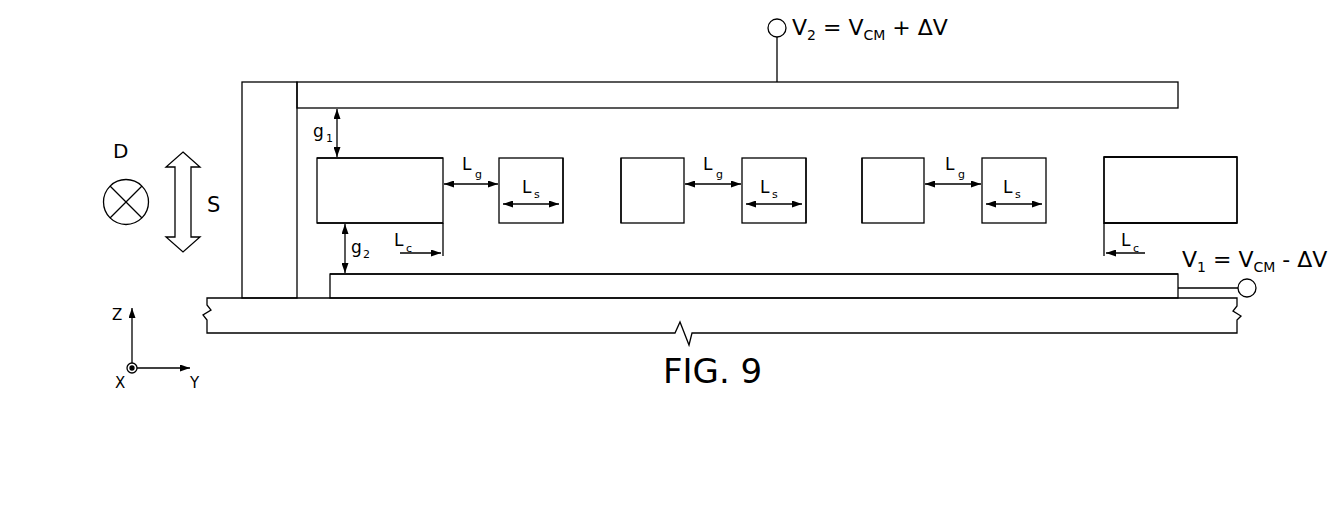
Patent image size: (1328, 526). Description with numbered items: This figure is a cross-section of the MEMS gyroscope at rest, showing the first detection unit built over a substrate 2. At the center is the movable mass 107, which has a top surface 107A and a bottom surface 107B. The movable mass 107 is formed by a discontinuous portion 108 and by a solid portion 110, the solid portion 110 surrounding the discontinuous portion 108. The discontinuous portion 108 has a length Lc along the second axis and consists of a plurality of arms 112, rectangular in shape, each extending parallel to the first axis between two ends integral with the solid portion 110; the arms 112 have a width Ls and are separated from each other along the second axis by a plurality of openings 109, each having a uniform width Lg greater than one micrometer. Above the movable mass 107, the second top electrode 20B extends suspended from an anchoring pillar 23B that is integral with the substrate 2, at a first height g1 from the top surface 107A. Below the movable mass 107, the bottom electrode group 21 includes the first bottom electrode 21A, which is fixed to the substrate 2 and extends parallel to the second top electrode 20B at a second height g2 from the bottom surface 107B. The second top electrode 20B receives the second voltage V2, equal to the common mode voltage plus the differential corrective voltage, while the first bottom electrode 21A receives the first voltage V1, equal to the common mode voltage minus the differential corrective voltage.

The substrate 2 is at (717, 328).
The second top electrode 20B is at (1143, 95).
The bottom electrode group 21 is at (1055, 266).
The first bottom electrode 21A is at (960, 252).
The anchoring pillar 23B is at (257, 92).
The movable mass 107 is at (1226, 133).
The top surface 107A is at (405, 151).
The bottom surface 107B is at (338, 221).
The discontinuous portion 108 is at (1046, 149).
The openings 109 is at (585, 201).
The solid portion 110 is at (357, 168).
The arms 112 is at (548, 171).